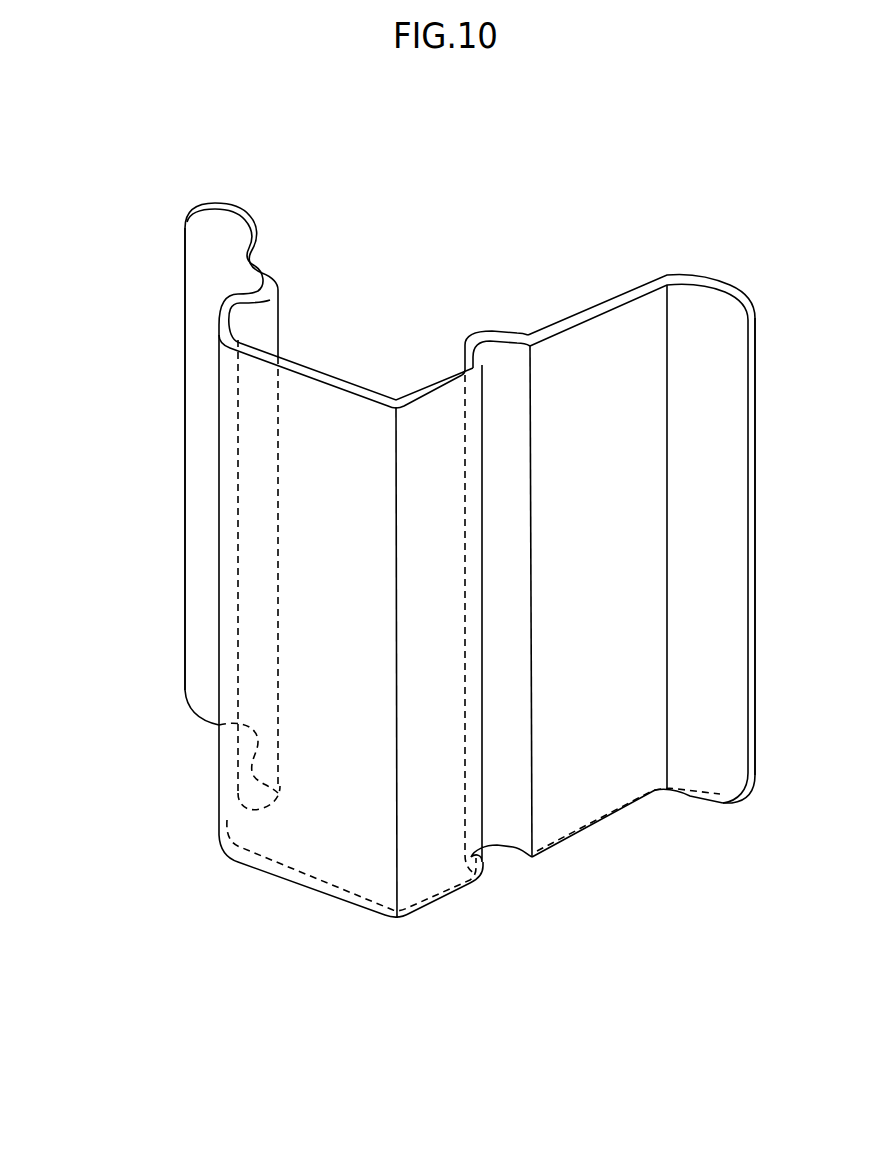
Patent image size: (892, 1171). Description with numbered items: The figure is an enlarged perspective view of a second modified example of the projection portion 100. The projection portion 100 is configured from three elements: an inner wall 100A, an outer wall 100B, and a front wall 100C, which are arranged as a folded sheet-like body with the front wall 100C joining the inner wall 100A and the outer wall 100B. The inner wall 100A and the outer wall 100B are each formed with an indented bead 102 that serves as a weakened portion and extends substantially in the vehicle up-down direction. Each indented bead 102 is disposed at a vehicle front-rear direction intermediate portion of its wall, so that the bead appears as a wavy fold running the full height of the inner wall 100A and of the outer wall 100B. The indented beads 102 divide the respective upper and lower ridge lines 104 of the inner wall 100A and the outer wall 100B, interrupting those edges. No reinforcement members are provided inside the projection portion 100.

The projection portion 100 is at (265, 920).
The inner wall 100A is at (218, 311).
The outer wall 100B is at (588, 795).
The front wall 100C is at (338, 872).
The indented bead 102 is at (262, 270).
The ridge line 104 is at (245, 240).